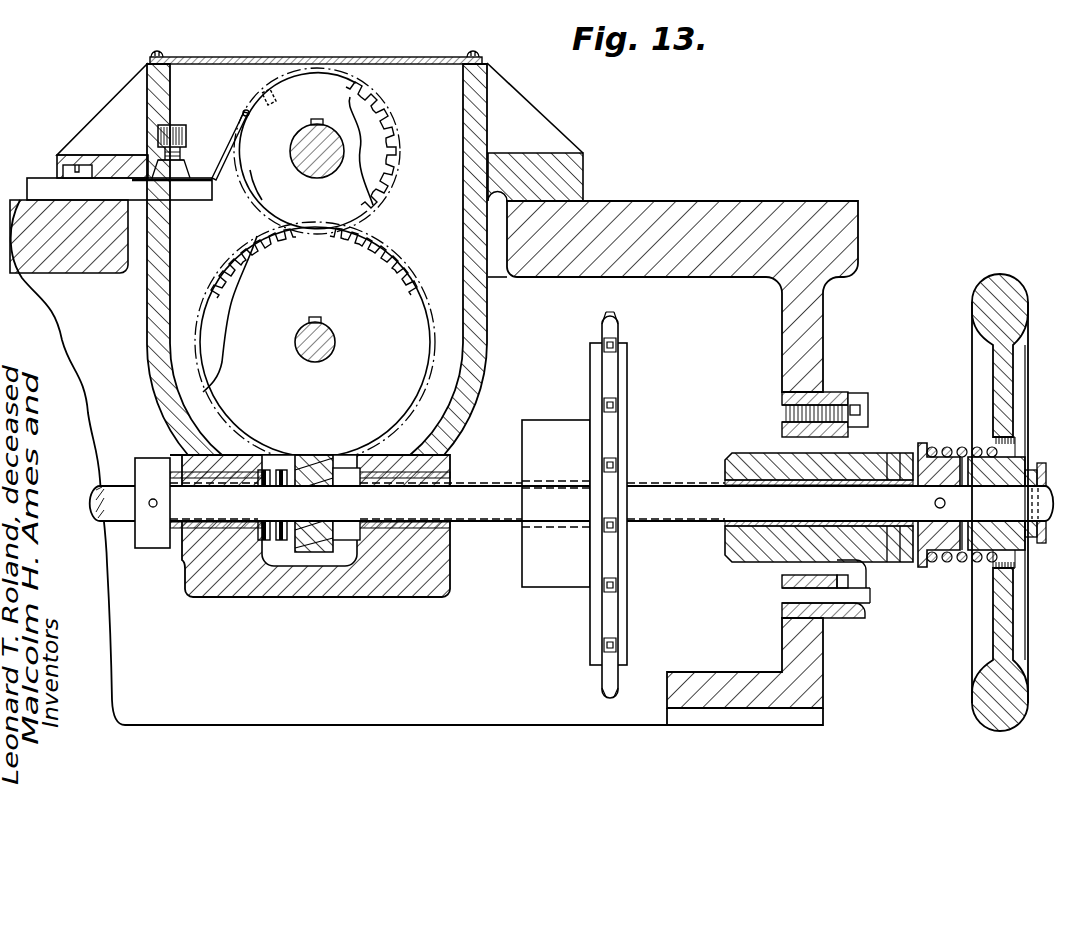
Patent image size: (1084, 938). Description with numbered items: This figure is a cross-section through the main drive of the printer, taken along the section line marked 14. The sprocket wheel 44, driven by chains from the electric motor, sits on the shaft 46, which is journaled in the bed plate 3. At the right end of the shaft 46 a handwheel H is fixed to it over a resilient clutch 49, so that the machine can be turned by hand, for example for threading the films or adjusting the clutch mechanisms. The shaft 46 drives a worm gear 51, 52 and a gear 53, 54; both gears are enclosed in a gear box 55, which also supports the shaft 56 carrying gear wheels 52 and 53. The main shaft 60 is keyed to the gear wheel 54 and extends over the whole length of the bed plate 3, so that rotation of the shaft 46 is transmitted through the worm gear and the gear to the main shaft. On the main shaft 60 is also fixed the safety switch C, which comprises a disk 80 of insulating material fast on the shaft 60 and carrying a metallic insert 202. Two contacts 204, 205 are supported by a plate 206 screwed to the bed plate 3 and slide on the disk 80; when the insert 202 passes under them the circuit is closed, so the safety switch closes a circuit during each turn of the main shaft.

The bed plate 3 is at (808, 206).
The section line 14- 14 is at (338, 22).
The sprocket wheel 44 is at (628, 375).
The shaft 46 is at (684, 492).
The resilient clutch 49 is at (928, 565).
The worm gear 51 is at (318, 548).
The gear wheel 52 is at (315, 342).
The gear wheel 53 is at (228, 273).
The gear wheel 54 is at (380, 148).
The gear box 55 is at (481, 362).
The shaft 56 is at (331, 338).
The main shaft 60 is at (312, 177).
The switch disk 80 is at (268, 196).
The metallic insert 202 is at (268, 92).
The contact 204 is at (233, 160).
The contact 205 is at (243, 113).
The plate 206 is at (32, 188).
The safety switch C is at (229, 108).
The handwheel H is at (1018, 294).